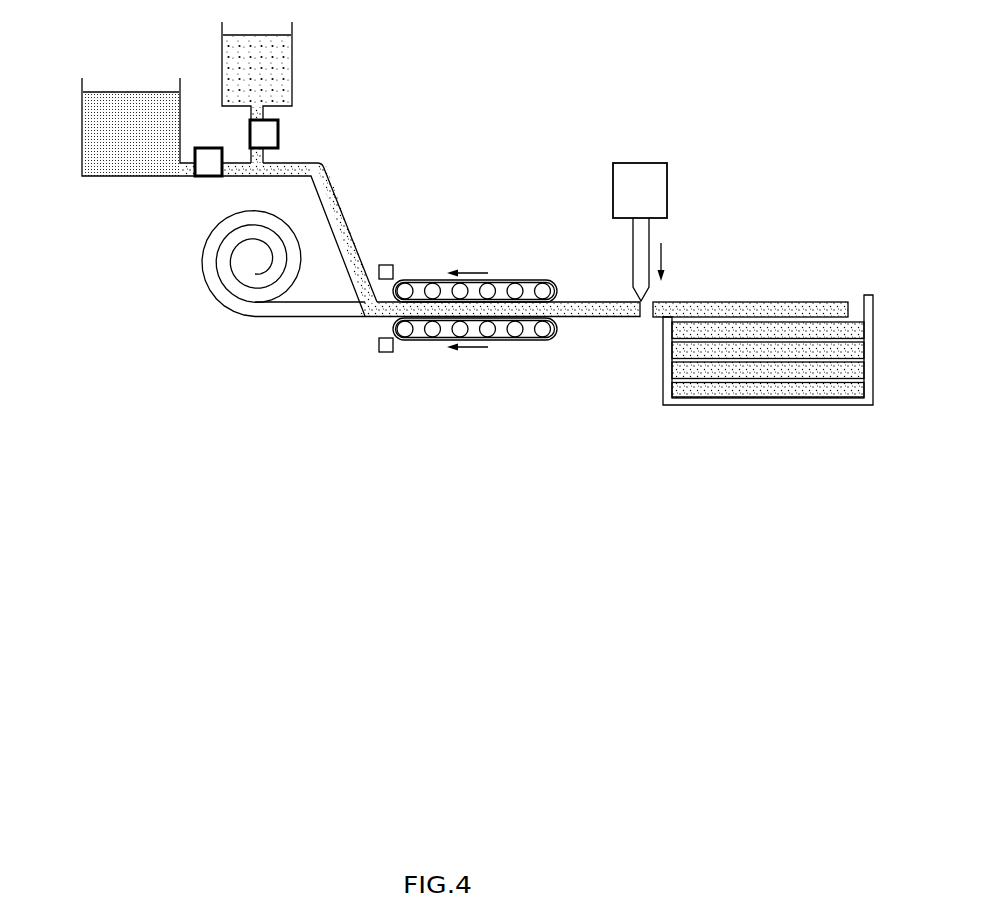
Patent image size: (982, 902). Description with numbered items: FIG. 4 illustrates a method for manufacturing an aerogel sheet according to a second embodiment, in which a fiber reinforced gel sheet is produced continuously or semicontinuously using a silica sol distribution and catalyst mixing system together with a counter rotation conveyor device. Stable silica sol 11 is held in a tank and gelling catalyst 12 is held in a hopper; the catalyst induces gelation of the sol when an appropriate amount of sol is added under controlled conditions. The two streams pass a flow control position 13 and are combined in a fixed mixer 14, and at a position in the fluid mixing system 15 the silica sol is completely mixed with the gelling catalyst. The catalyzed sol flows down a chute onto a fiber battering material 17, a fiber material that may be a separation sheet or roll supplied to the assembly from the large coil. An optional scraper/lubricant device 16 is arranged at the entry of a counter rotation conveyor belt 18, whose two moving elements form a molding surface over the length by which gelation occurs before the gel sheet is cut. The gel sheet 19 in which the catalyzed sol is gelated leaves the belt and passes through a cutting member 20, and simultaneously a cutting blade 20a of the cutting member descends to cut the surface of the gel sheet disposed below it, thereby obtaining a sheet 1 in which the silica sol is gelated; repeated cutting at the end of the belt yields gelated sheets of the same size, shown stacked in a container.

The sheet in which the silica sol is gelated 1 is at (811, 302).
The stable silica sol 11 is at (98, 124).
The gelling catalyst 12 is at (273, 52).
The flow control position 13 is at (207, 147).
The fixed mixer 14 is at (299, 149).
The position in a fluid mixing system 15 is at (310, 172).
The scraper/lubricant device 16 is at (386, 265).
The fiber battering material 17 is at (198, 262).
The counter rotation conveyor belt 18 is at (527, 280).
The formed sheet 19 is at (590, 302).
The cutting member 20 is at (640, 163).
The cutting blade 20a is at (650, 228).